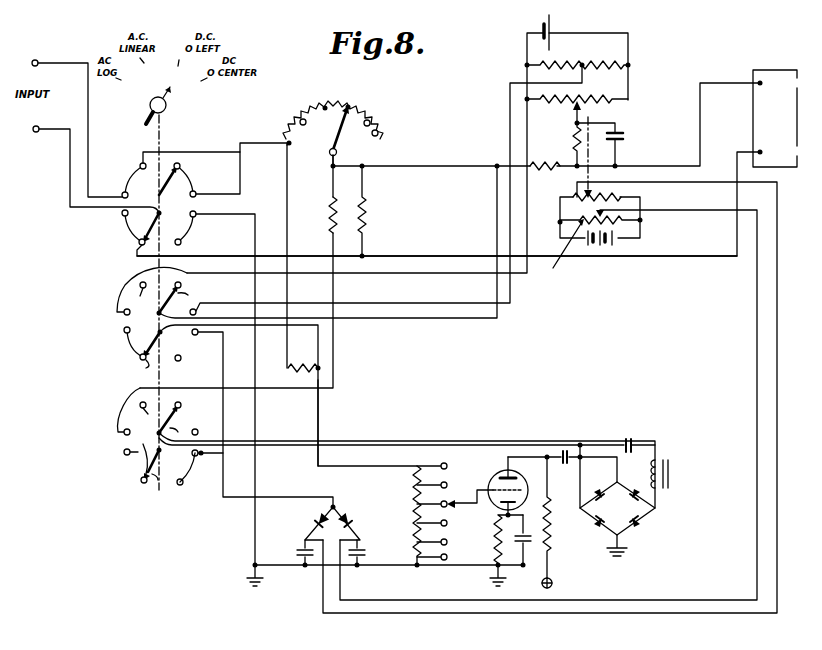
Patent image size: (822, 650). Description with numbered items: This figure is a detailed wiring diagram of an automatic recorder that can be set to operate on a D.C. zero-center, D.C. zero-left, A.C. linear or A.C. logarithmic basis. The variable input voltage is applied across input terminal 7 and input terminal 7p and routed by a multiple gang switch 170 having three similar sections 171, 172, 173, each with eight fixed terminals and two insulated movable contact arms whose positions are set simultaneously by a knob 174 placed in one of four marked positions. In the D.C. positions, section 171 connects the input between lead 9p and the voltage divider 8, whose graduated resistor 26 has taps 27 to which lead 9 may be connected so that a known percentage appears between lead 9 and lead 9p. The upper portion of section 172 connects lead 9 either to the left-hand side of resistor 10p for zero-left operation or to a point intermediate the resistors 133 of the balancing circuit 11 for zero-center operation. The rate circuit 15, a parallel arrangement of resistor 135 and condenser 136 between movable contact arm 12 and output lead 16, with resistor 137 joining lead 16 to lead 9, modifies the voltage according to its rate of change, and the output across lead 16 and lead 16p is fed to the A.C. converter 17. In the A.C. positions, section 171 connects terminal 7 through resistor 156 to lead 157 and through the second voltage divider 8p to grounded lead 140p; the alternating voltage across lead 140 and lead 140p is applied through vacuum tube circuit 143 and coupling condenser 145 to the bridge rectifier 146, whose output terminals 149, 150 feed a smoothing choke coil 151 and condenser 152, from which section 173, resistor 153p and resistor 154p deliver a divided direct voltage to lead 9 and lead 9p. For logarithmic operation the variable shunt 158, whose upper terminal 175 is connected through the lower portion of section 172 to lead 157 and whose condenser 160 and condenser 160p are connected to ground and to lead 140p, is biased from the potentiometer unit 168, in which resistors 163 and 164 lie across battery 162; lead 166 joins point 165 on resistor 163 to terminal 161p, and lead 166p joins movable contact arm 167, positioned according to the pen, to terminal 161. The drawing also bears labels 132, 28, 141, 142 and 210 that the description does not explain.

The input terminal 7 is at (31, 63).
The input terminal 7p is at (36, 133).
The multiple gang switch 170 is at (162, 136).
The knob 174 is at (166, 106).
The switch section 171 is at (118, 230).
The switch section 172 is at (115, 315).
The switch section 173 is at (141, 436).
The vacuum tube circuit 143 is at (540, 441).
The resistor 26 is at (341, 99).
The taps 27 is at (350, 112).
The voltage divider 8 is at (318, 154).
The switch terminal 132 is at (359, 158).
The lead 9 is at (451, 167).
The lead 9p is at (456, 256).
The resistor 153p is at (328, 218).
The resistor 154p is at (366, 216).
The resistor 156 is at (320, 374).
The lead 157 is at (318, 422).
The balancing circuit 11 is at (660, 53).
The battery 28 is at (540, 20).
The resistors 133 is at (605, 60).
The resistor 10p is at (585, 98).
The movable contact arm 12 is at (572, 112).
The resistor 137 is at (553, 163).
The rate circuit 15 is at (596, 134).
The condenser 136 is at (624, 132).
The resistor 135 is at (624, 140).
The A.C. converter 17 is at (776, 118).
The output lead 16 is at (718, 81).
The lead 16p is at (740, 150).
The potentiometer unit 168 is at (548, 216).
The resistor 164 is at (636, 194).
The point 165 is at (613, 213).
The resistor 163 is at (567, 251).
The battery 162 is at (618, 240).
The movable contact arm 167 is at (577, 186).
The second voltage divider 8p is at (398, 508).
The vacuum tube 141 is at (500, 477).
The lead 140 is at (455, 503).
The grounded lead 140p is at (286, 566).
The coupling condenser 145 is at (577, 452).
The condenser 152 is at (638, 441).
The choke coil 151 is at (662, 462).
The resistor 142 is at (557, 535).
The bridge type rectifier 146 is at (630, 516).
The output terminal 149 is at (592, 529).
The output terminal 150 is at (655, 518).
The upper terminal 175 is at (333, 505).
The terminal 161 is at (313, 523).
The terminal 161p is at (355, 523).
The variable shunt 158 is at (330, 536).
The condenser 160 is at (284, 559).
The condenser 160p is at (366, 553).
The lead 166 is at (676, 600).
The lead 166p is at (680, 613).
The circuit 210 is at (517, 640).